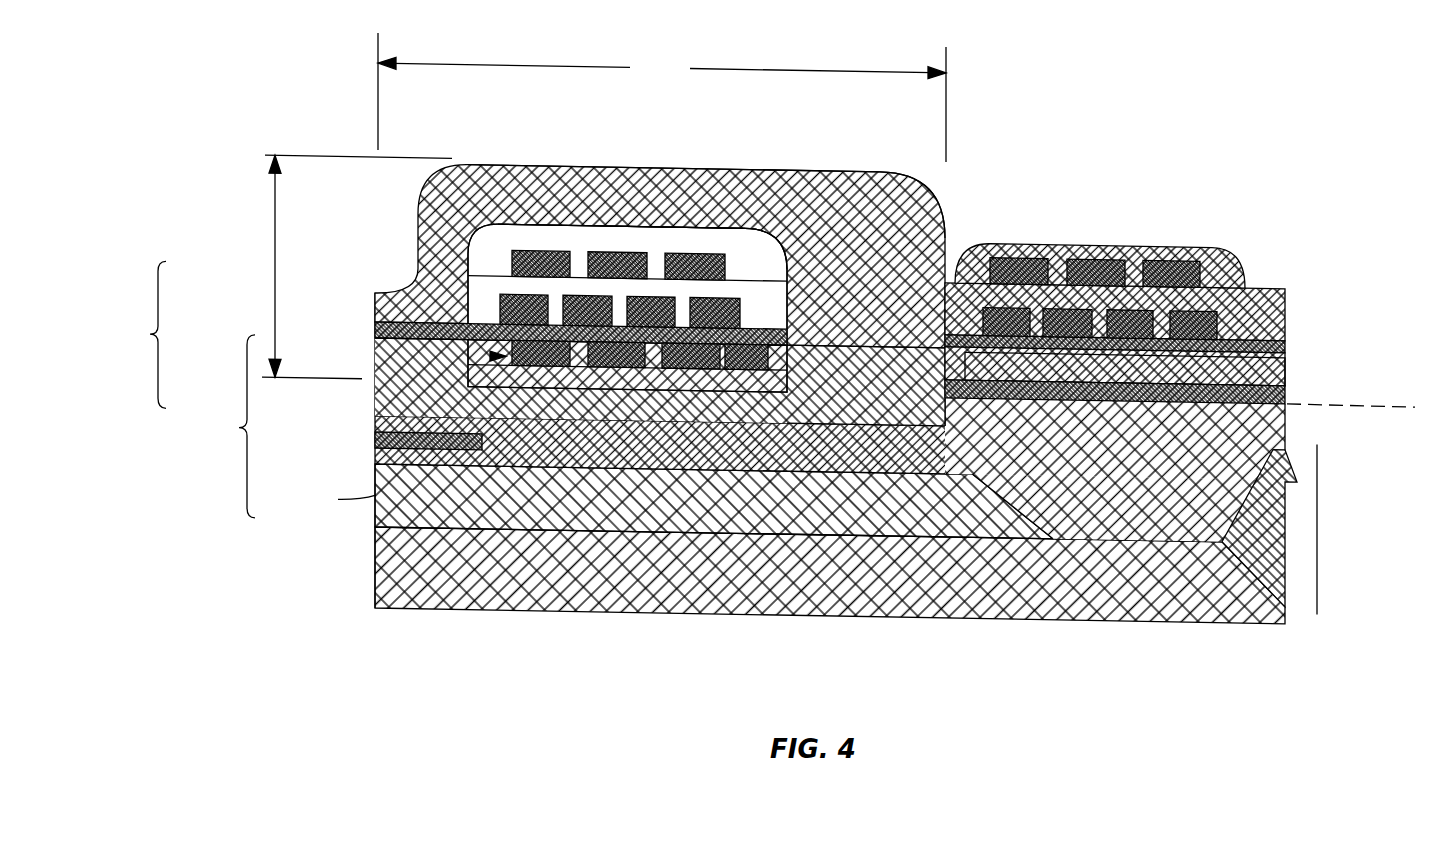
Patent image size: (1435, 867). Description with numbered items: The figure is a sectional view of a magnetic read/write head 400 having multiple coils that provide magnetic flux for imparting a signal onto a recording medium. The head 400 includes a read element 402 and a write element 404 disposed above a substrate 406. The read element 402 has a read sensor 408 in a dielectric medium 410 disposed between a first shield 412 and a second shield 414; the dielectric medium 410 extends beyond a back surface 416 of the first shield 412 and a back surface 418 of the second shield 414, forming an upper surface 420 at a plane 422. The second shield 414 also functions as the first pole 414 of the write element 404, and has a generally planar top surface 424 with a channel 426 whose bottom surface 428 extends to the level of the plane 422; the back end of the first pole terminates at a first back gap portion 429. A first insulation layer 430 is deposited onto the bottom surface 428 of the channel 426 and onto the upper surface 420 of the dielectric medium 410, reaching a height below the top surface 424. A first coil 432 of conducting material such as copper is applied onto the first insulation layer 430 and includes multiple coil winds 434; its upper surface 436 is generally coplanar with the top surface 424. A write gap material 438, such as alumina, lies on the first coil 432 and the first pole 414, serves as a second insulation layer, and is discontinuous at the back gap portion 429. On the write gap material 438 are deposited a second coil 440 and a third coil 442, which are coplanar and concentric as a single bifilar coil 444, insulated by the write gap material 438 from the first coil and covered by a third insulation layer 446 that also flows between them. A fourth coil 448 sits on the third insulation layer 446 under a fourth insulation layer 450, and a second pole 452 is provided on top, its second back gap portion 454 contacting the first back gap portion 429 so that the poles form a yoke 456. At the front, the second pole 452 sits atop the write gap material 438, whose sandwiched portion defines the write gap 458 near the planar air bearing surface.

The magnetic read/write head 400 is at (1110, 72).
The read element 402 is at (216, 426).
The write element 404 is at (130, 334).
The substrate 406 is at (573, 593).
The read sensor 408 is at (376, 440).
The dielectric medium 410 is at (616, 458).
The first shield 412 is at (741, 510).
The second shield 414 is at (727, 410).
The back surface of the first shield 416 is at (1020, 488).
The back surface of the second shield 418 is at (953, 395).
The upper surface 420 is at (1267, 380).
The plane 422 is at (1362, 392).
The top surface 424 is at (931, 333).
The channel 426 is at (490, 354).
The bottom surface 428 is at (750, 380).
The first back gap portion 429 is at (867, 410).
The first insulation layer 430 is at (640, 381).
The first coil 432 is at (470, 381).
The coil winds 434 is at (541, 380).
The upper surface 436 is at (788, 325).
The write gap material 438 is at (377, 332).
The second coil 440 is at (505, 276).
The third coil 442 is at (742, 290).
The bifilar coil 444 is at (1245, 311).
The third insulation layer 446 is at (660, 224).
The fourth coil 448 is at (529, 245).
The fourth insulation layer 450 is at (616, 224).
The second pole 452 is at (562, 158).
The second back gap portion 454 is at (928, 190).
The yoke 456 is at (752, 160).
The write gap 458 is at (376, 322).